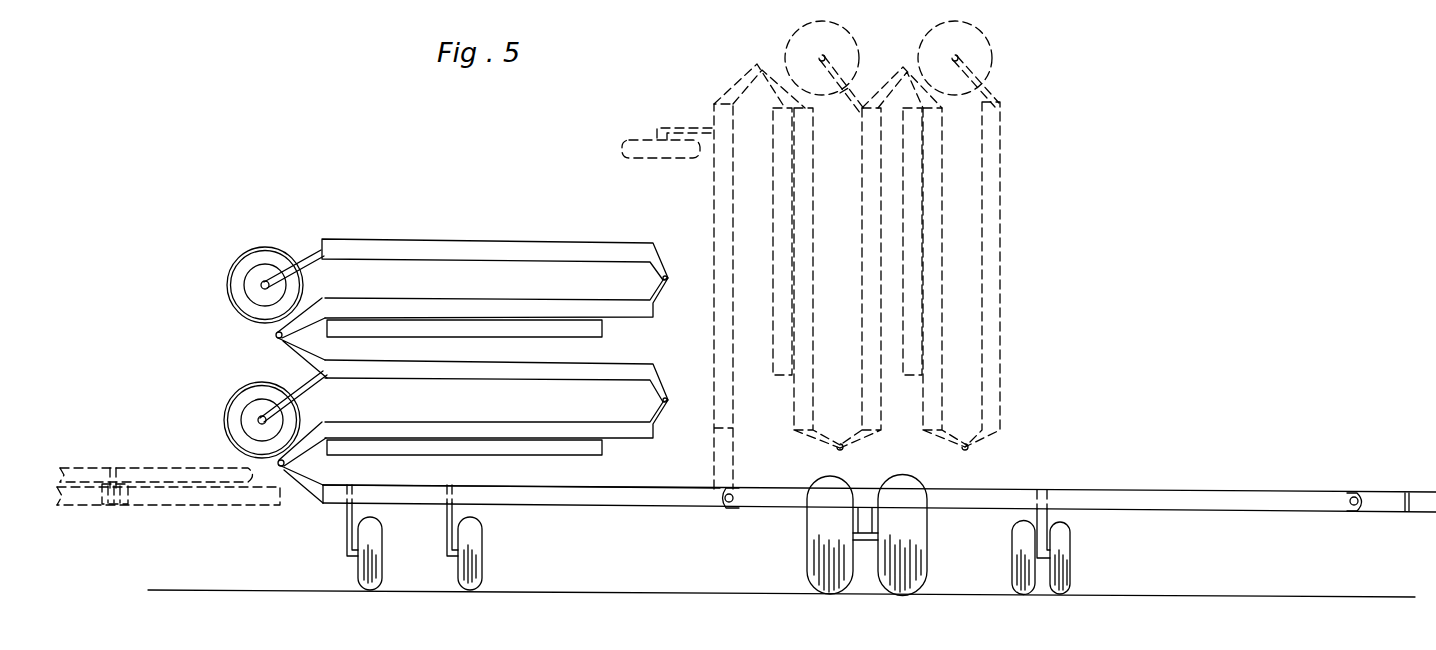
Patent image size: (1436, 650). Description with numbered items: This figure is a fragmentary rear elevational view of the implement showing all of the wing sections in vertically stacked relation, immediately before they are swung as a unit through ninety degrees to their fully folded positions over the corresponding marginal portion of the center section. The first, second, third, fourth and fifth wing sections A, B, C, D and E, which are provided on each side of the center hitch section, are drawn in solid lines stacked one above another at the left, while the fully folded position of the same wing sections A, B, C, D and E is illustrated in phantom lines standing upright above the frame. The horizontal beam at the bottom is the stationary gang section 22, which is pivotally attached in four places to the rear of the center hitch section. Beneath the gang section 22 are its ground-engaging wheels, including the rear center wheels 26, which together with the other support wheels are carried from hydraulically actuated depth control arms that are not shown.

The first wing section A is at (712, 118).
The second wing section B is at (558, 430).
The third wing section C is at (471, 378).
The fourth wing section D is at (614, 305).
The fifth wing section E is at (628, 252).
The stationary gang section 22 is at (980, 489).
The rear center wheels 26 is at (1020, 545).